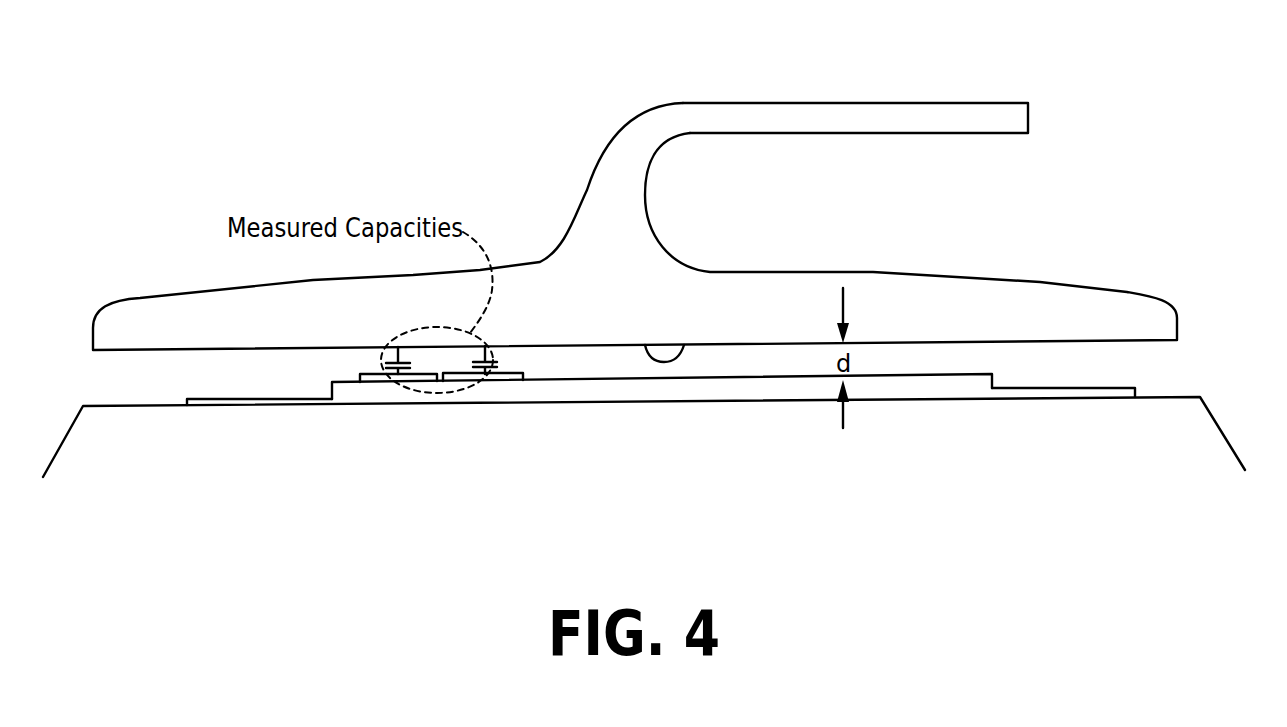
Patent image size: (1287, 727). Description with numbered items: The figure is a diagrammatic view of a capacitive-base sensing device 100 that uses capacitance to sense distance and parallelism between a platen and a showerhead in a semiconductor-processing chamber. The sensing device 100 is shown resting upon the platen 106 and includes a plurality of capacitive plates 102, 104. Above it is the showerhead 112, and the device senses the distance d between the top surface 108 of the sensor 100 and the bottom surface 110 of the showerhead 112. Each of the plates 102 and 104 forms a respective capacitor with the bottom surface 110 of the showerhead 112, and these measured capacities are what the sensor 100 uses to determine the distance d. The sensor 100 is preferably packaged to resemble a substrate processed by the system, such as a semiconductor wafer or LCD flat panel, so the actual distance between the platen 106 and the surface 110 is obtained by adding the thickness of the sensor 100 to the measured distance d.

The capacitive-base sensing device 100 is at (997, 387).
The capacitive plate 102 is at (515, 383).
The capacitive plate 104 is at (367, 383).
The platen 106 is at (1176, 397).
The top surface 108 is at (737, 376).
The bottom surface 110 is at (687, 345).
The showerhead 112 is at (912, 103).